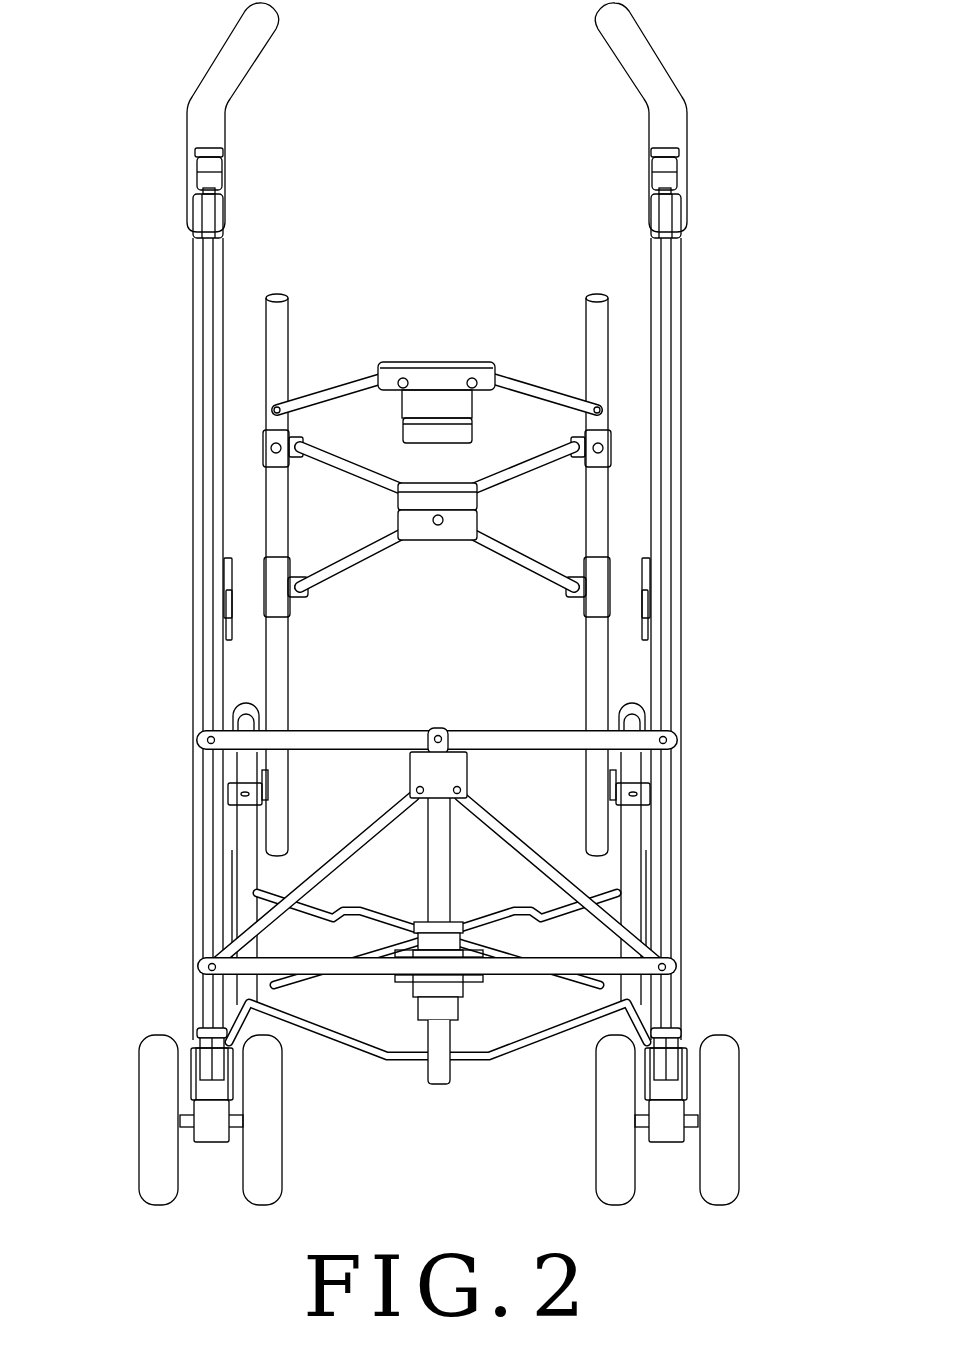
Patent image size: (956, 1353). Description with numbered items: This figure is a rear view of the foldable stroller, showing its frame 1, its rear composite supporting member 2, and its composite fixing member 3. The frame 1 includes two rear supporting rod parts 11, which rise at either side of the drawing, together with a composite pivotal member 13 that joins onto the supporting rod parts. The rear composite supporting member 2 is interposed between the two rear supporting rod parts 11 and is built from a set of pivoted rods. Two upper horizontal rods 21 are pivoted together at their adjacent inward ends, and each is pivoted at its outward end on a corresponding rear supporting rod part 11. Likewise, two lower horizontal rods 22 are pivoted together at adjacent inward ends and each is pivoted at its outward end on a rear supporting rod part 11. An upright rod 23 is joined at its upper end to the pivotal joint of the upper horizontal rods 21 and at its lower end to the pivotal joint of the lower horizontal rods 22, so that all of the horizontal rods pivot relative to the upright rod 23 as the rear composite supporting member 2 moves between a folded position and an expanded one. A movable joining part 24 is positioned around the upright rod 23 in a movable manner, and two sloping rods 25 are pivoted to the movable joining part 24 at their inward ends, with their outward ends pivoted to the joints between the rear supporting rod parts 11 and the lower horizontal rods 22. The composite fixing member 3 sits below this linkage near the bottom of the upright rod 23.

The frame 1 is at (448, 216).
The rear composite supporting member 2 is at (462, 692).
The composite fixing member 3 is at (443, 1008).
The rear supporting rod parts 11 is at (210, 623).
The composite pivotal member 13 is at (420, 539).
The upper horizontal rods 21 is at (335, 740).
The lower horizontal rods 22 is at (333, 975).
The upright rod 23 is at (446, 875).
The movable joining part 24 is at (462, 778).
The sloping rods 25 is at (345, 857).